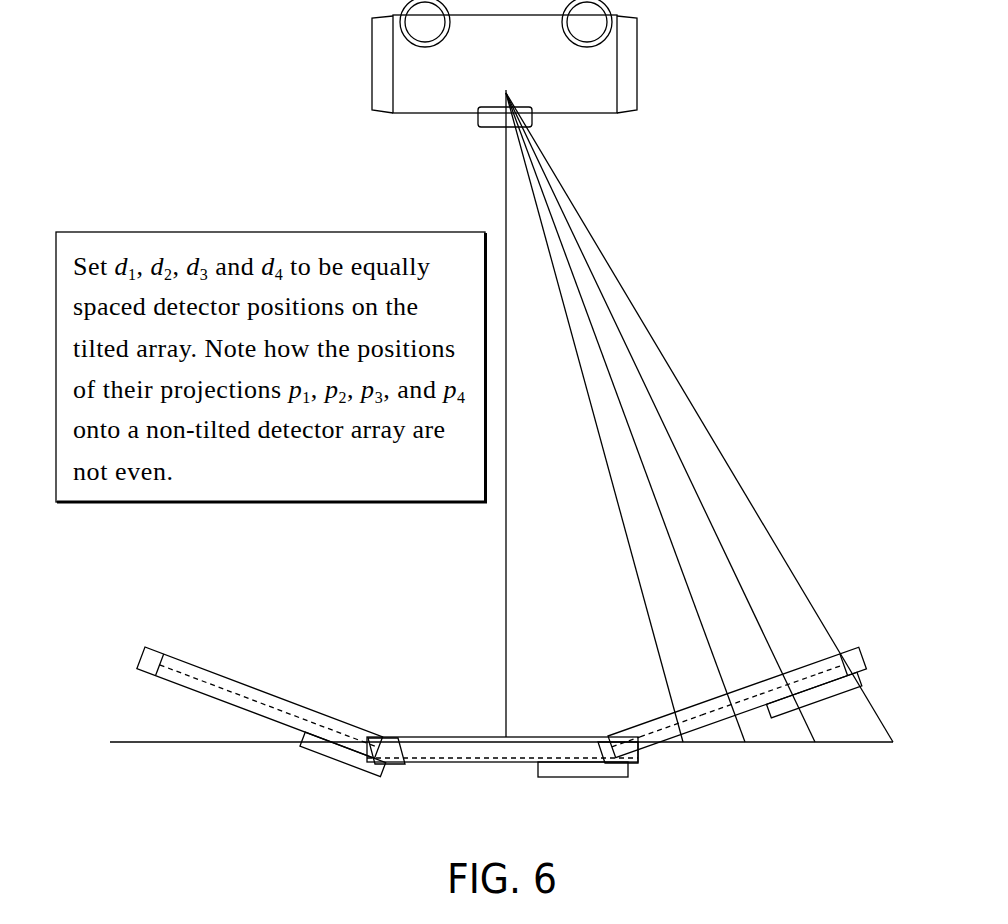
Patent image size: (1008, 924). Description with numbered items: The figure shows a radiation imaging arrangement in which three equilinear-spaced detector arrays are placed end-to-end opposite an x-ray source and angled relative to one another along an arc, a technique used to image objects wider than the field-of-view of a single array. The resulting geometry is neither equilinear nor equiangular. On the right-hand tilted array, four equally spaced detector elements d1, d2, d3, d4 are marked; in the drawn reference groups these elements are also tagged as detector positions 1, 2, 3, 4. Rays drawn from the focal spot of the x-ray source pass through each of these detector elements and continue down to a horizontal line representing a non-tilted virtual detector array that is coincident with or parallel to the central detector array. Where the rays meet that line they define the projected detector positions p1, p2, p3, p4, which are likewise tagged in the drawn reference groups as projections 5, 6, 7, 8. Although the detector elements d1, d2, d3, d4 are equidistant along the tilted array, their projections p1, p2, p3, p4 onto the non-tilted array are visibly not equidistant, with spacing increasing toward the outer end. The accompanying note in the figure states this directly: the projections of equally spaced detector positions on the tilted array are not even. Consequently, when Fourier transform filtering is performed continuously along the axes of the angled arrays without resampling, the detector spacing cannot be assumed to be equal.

The detector element d1 is at (670, 709).
The detector element d2 is at (725, 689).
The detector element d3 is at (779, 670).
The detector element d4 is at (821, 651).
The projected detector position p1 is at (600, 437).
The projected detector position p2 is at (633, 437).
The projected detector position p3 is at (668, 437).
The projected detector position p4 is at (705, 437).
The detector position d1 on tilted array 1 is at (670, 709).
The detector position d2 on tilted array 2 is at (725, 689).
The detector position d3 on tilted array 3 is at (779, 670).
The detector position d4 on tilted array 4 is at (821, 651).
The projection p1 onto non-tilted detector array 5 is at (600, 437).
The projection p2 onto non-tilted detector array 6 is at (633, 437).
The projection p3 onto non-tilted detector array 7 is at (668, 437).
The projection p4 onto non-tilted detector array 8 is at (705, 437).